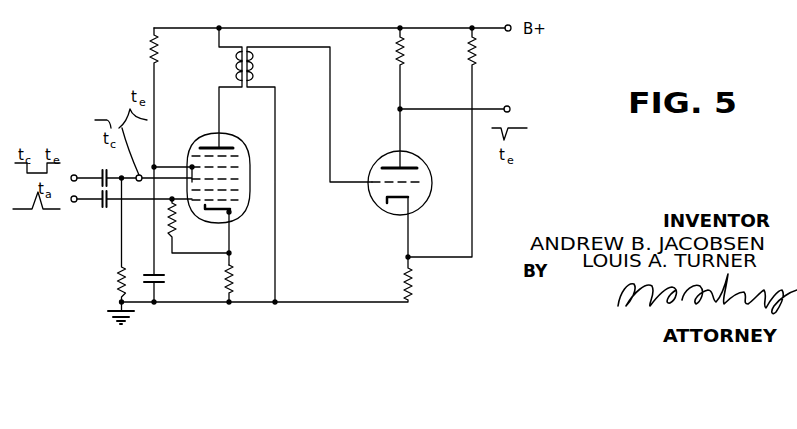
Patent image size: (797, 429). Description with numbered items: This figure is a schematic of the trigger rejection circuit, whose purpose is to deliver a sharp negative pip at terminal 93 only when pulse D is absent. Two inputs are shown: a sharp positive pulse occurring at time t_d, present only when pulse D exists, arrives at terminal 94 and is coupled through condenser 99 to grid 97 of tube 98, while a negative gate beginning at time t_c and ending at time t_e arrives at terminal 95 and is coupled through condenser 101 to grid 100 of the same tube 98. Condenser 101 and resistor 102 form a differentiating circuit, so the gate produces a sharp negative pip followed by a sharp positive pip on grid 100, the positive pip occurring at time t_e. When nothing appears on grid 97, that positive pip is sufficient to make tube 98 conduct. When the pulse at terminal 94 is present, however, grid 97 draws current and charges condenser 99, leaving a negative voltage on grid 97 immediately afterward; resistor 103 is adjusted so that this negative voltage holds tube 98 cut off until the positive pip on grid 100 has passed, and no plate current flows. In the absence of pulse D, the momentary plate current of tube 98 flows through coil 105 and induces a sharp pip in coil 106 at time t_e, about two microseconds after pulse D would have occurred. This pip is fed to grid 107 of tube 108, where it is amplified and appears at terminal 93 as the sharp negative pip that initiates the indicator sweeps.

The terminal 93 is at (507, 106).
The terminal 94 is at (74, 203).
The terminal 95 is at (73, 174).
The grid 97 is at (232, 200).
The tube 98 is at (204, 138).
The condenser 99 is at (107, 207).
The grid 100 is at (231, 179).
The condenser 101 is at (112, 172).
The resistor 102 is at (119, 272).
The resistor 103 is at (175, 230).
The coil 105 is at (232, 80).
The coil 106 is at (258, 68).
The grid 107 is at (416, 182).
The tube 108 is at (386, 151).